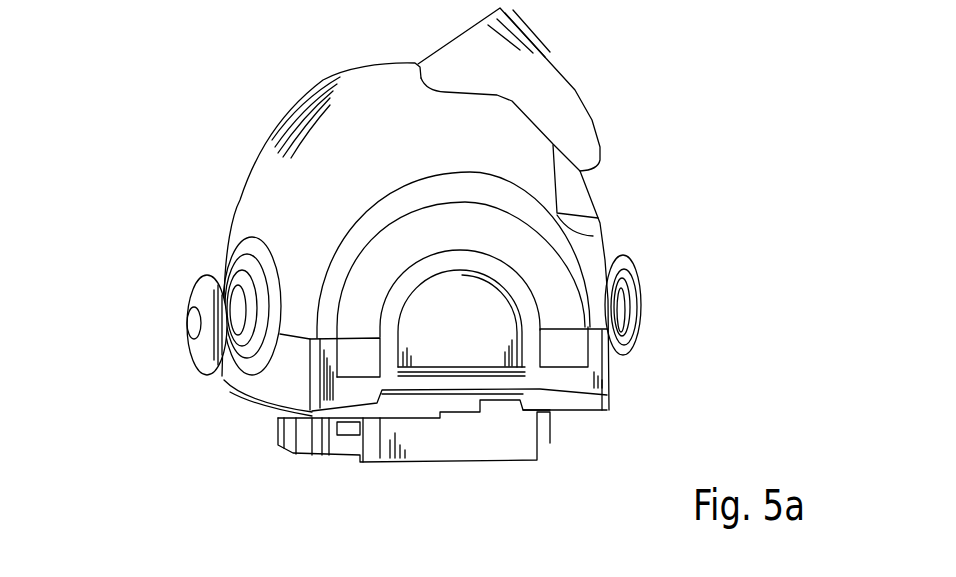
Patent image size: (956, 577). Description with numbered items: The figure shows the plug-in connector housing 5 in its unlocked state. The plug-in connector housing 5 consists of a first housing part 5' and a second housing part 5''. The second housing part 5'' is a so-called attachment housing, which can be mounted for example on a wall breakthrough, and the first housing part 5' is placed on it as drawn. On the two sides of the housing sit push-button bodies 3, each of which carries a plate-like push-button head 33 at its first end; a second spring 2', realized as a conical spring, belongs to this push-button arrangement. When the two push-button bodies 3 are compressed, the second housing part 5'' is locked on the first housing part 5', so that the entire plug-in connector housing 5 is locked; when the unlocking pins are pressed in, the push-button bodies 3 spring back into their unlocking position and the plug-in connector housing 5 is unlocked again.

The plug-in connector housing 5 is at (347, 237).
The first housing part 5' is at (581, 91).
The second housing part 5'' is at (513, 424).
The push-button body 3 is at (647, 261).
The second spring 2' is at (676, 319).
The push-button head 33 is at (193, 293).